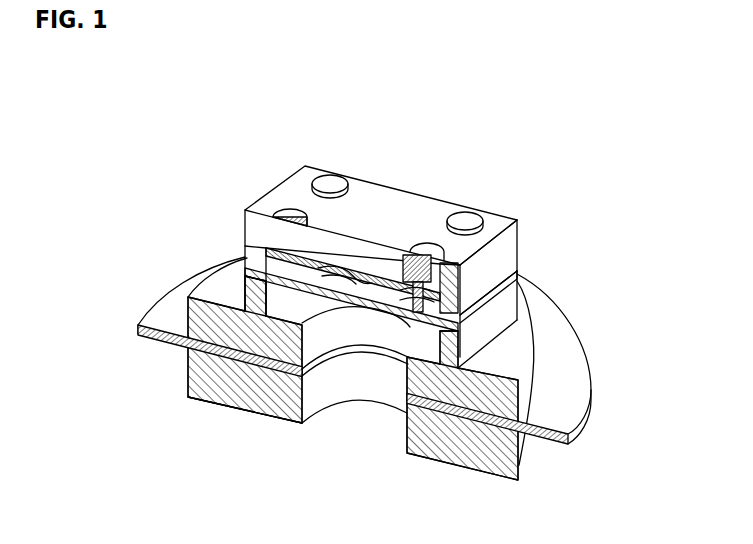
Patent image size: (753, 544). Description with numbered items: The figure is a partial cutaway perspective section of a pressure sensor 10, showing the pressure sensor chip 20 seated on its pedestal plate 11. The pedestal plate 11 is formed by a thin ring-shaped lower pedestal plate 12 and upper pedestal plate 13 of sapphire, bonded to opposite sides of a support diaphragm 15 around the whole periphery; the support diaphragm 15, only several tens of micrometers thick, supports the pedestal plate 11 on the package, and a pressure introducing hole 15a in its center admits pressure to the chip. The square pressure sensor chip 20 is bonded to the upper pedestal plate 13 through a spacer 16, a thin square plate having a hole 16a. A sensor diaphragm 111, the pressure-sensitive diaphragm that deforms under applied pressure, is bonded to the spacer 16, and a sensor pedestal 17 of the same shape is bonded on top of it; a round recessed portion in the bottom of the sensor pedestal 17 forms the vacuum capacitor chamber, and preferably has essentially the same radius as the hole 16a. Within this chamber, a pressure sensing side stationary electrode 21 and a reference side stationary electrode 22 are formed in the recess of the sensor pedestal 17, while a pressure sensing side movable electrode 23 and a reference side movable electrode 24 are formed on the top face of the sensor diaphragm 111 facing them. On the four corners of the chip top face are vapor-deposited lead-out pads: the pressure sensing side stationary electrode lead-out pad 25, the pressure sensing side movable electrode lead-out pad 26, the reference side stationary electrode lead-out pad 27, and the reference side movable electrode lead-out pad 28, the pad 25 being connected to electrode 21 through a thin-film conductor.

The pressure sensor 10 is at (207, 118).
The pedestal plate 11 is at (401, 377).
The lower pedestal plate 12 is at (537, 457).
The upper pedestal plate 13 is at (512, 352).
The support diaphragm 15 is at (574, 398).
The pressure introducing hole 15a is at (328, 357).
The spacer 16 is at (500, 317).
The hole 16a is at (257, 407).
The sensor pedestal 17 is at (507, 255).
The pressure sensor chip 20 is at (372, 176).
The pressure sensing side stationary electrode 21 is at (357, 272).
The reference side stationary electrode 22 is at (408, 268).
The pressure sensing side movable electrode 23 is at (383, 283).
The reference side movable electrode 24 is at (520, 276).
The pressure sensing side stationary electrode lead-out pad 25 is at (288, 208).
The pressure sensing side movable electrode lead-out pad 26 is at (331, 183).
The reference side stationary electrode lead-out pad 27 is at (428, 242).
The reference side movable electrode lead-out pad 28 is at (474, 210).
The sensor diaphragm 111 is at (240, 268).